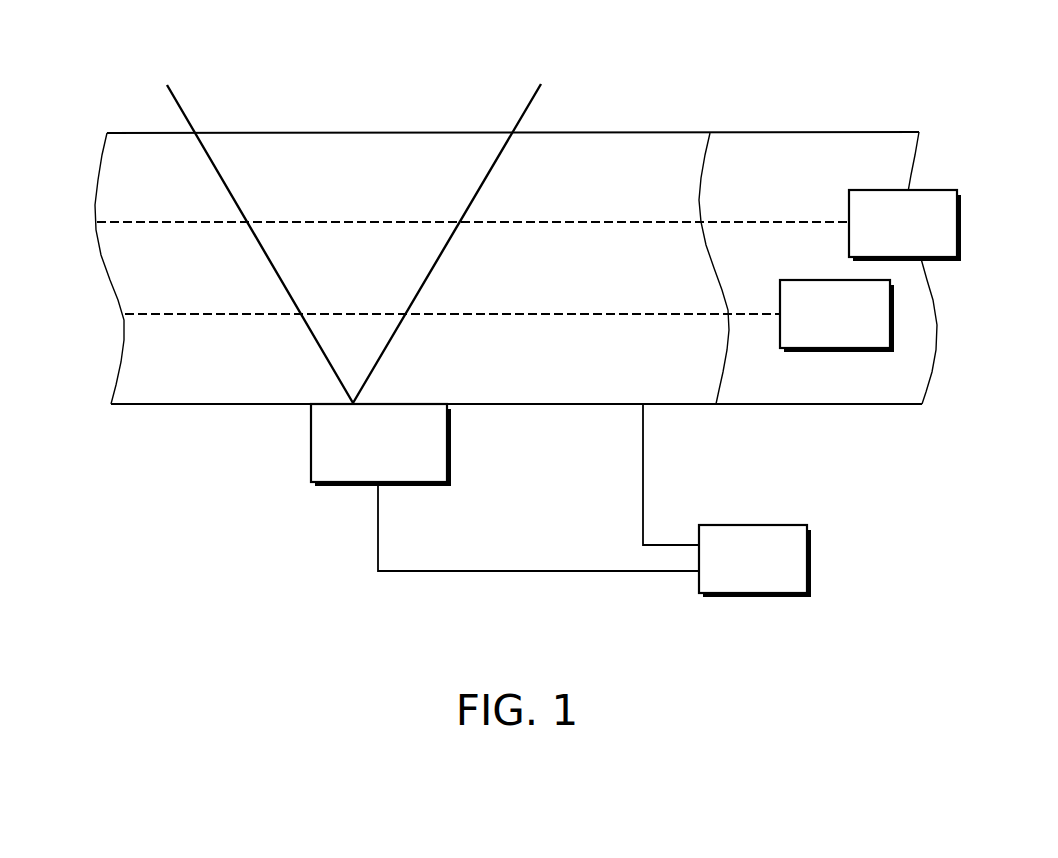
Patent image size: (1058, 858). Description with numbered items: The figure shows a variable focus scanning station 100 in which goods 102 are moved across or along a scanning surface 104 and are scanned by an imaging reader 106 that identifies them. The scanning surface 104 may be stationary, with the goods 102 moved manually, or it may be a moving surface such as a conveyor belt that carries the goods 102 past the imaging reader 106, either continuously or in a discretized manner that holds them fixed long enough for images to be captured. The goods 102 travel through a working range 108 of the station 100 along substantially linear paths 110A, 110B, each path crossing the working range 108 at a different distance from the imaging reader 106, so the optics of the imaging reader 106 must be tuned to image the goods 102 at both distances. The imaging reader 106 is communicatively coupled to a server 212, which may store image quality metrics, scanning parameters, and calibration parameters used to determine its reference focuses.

The scanning station 100 is at (133, 57).
The goods 102 is at (929, 238).
The scanning surface 104 is at (808, 140).
The imaging reader 106 is at (311, 442).
The working range 108 is at (378, 197).
The linear path 110A is at (537, 314).
The linear path 110B is at (612, 222).
The server 212 is at (751, 595).